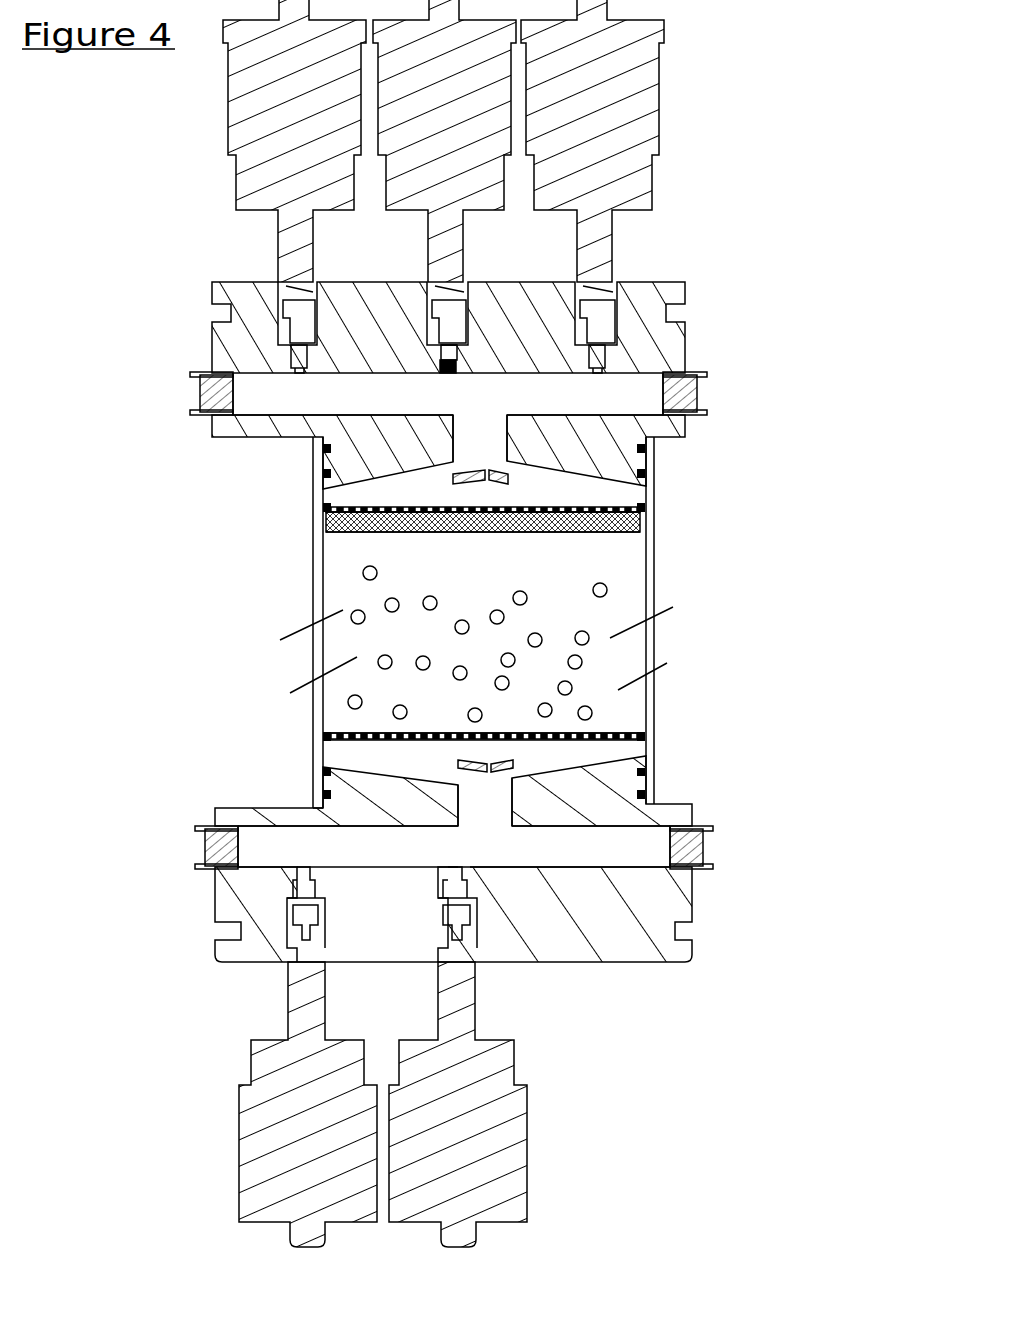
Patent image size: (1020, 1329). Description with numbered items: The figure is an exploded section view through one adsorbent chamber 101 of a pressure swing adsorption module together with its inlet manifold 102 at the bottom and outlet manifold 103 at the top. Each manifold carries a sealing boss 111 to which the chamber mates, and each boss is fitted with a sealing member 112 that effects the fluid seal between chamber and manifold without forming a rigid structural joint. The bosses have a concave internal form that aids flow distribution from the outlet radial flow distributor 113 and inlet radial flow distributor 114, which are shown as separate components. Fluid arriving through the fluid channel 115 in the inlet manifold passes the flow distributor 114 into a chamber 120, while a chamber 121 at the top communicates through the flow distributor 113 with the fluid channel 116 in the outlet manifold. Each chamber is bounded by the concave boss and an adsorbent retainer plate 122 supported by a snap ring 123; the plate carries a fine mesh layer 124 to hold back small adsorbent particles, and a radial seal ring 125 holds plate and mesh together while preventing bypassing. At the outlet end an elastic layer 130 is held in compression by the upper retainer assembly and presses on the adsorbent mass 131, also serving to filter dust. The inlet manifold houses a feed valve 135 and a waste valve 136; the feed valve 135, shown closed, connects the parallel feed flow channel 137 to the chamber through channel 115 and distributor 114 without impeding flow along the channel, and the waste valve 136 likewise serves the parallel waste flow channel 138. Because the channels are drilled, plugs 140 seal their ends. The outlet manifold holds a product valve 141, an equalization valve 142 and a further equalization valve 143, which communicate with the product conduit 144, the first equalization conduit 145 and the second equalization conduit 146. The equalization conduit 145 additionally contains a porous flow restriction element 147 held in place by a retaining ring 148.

The adsorbent chamber 101 is at (667, 515).
The inlet manifold 102 is at (642, 920).
The outlet manifold 103 is at (690, 284).
The sealing boss 111 is at (624, 425).
The sealing member 112 is at (316, 765).
The outlet radial flow distributor 113 is at (453, 478).
The inlet radial flow distributor 114 is at (517, 758).
The fluid channel 115 is at (498, 836).
The fluid channel 116 is at (490, 407).
The chamber 120 is at (464, 757).
The chamber 121 is at (506, 486).
The adsorbent retainer plate 122 is at (388, 532).
The snap ring 123 is at (664, 493).
The fine mesh layer 124 is at (470, 532).
The radial seal ring 125 is at (662, 507).
The elastic layer 130 is at (523, 532).
The adsorbent mass 131 is at (540, 613).
The feed valve 135 is at (308, 1104).
The waste valve 136 is at (458, 1104).
The feed flow channel 137 is at (315, 930).
The waste flow channel 138 is at (470, 940).
The plug 140 is at (205, 849).
The product valve 141 is at (294, 141).
The equalization valve 142 is at (444, 141).
The equalization valve 143 is at (592, 141).
The product conduit 144 is at (283, 303).
The first equalization conduit 145 is at (430, 302).
The second equalization conduit 146 is at (605, 300).
The porous flow restriction element 147 is at (432, 369).
The retaining ring 148 is at (432, 358).